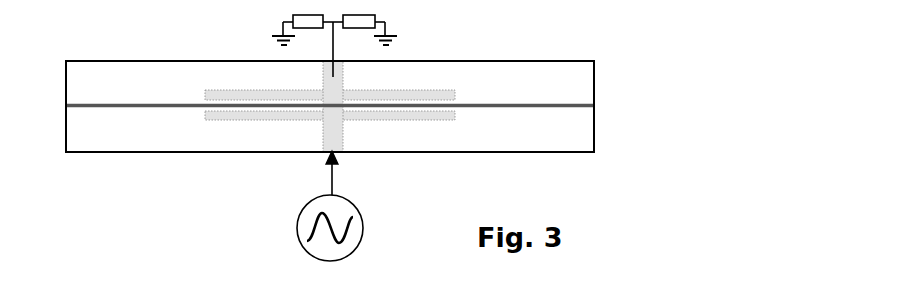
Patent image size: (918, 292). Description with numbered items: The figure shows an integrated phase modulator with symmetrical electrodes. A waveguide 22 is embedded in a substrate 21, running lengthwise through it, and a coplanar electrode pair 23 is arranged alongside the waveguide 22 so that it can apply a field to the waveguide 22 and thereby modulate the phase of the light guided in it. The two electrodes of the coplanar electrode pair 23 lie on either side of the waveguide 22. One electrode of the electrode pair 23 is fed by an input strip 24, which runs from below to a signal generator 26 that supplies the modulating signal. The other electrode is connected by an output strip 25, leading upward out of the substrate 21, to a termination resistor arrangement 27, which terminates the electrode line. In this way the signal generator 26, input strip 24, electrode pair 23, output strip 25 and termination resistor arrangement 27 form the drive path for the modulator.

The substrate 21 is at (580, 82).
The waveguide 22 is at (587, 105).
The coplanar electrode pair 23 is at (452, 115).
The input strip 24 is at (322, 140).
The output strip 25 is at (322, 79).
The signal generator 26 is at (352, 210).
The termination resistor arrangement 27 is at (376, 17).